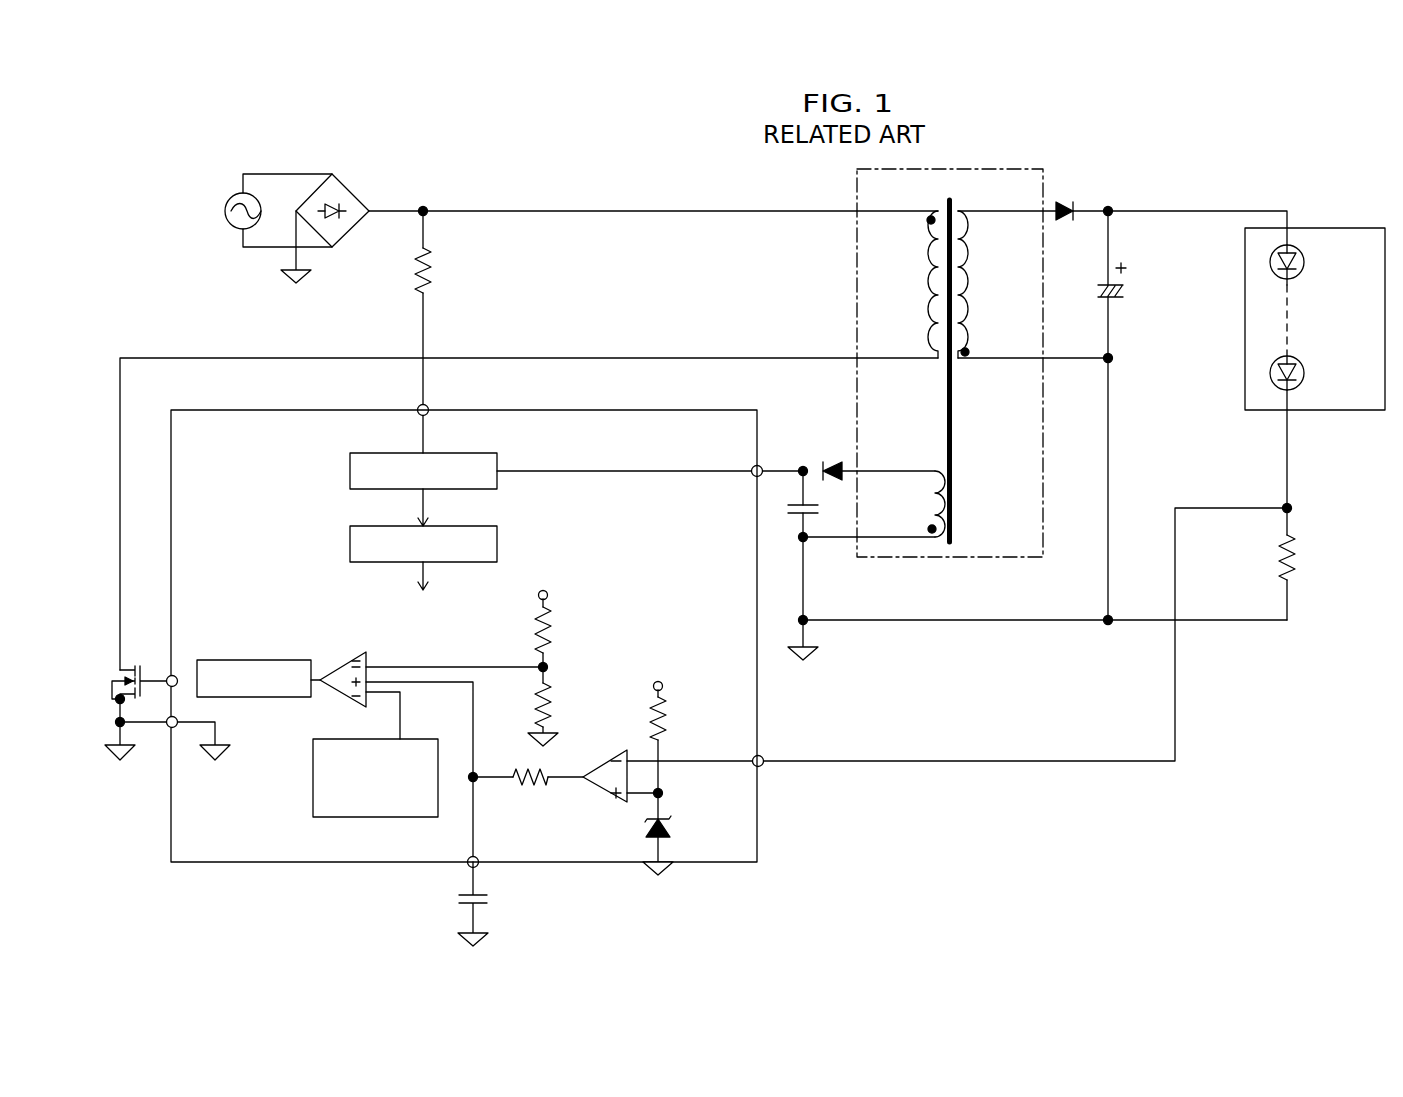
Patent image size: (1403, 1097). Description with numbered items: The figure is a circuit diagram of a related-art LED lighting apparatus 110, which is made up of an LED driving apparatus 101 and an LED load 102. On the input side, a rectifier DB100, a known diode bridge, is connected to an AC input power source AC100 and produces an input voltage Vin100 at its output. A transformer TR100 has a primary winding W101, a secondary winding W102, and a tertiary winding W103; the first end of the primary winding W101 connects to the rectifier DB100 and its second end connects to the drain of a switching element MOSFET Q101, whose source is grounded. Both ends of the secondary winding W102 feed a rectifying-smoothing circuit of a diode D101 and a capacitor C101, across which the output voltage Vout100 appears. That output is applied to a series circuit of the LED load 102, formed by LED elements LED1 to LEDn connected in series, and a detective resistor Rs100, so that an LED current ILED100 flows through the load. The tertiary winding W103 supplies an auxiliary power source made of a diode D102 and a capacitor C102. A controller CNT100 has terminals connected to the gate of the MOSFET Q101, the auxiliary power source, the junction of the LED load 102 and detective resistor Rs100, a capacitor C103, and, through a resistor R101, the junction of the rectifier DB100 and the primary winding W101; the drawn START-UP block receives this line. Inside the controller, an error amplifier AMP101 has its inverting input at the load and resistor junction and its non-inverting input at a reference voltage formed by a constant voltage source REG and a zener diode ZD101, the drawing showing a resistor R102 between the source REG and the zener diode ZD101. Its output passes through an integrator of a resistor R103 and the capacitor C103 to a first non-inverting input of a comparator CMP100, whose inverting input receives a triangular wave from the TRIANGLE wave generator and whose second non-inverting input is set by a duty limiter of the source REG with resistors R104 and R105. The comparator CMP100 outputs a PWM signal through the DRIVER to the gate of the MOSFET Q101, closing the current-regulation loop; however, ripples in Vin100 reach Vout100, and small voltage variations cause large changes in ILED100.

The LED lighting apparatus 110 is at (490, 128).
The LED driving apparatus 101 is at (633, 170).
The LED load 102 is at (1311, 229).
The AC input power source AC100 is at (242, 212).
The rectifier DB100 is at (325, 212).
The input voltage Vin100 is at (430, 193).
The resistor R101 is at (457, 270).
The transformer TR100 is at (950, 363).
The primary winding W101 is at (900, 284).
The secondary winding W102 is at (995, 284).
The tertiary winding W103 is at (906, 504).
The diode D101 is at (1073, 230).
The output voltage Vout100 is at (1135, 191).
The capacitor C101 is at (1140, 283).
The LED element LED1 is at (1320, 265).
The LED element LEDn is at (1320, 370).
The LED current ILED100 is at (1305, 437).
The detective resistor Rs100 is at (1327, 565).
The controller CNT100 is at (456, 615).
The start-up circuit START-UP is at (423, 471).
The constant voltage source REG is at (423, 544).
The diode D102 is at (821, 456).
The capacitor C102 is at (788, 505).
The switching element MOSFET Q101 is at (140, 672).
The driver DRIVER is at (254, 678).
The comparator CMP100 is at (343, 663).
The triangular wave generator TRIANGLE is at (375, 778).
The resistor R104 is at (577, 631).
The resistor R105 is at (574, 714).
The reference bias resistor R102 is at (691, 745).
The resistor R103 is at (528, 795).
The error amplifier AMP101 is at (607, 795).
The zener diode ZD101 is at (694, 845).
The capacitor C103 is at (440, 904).